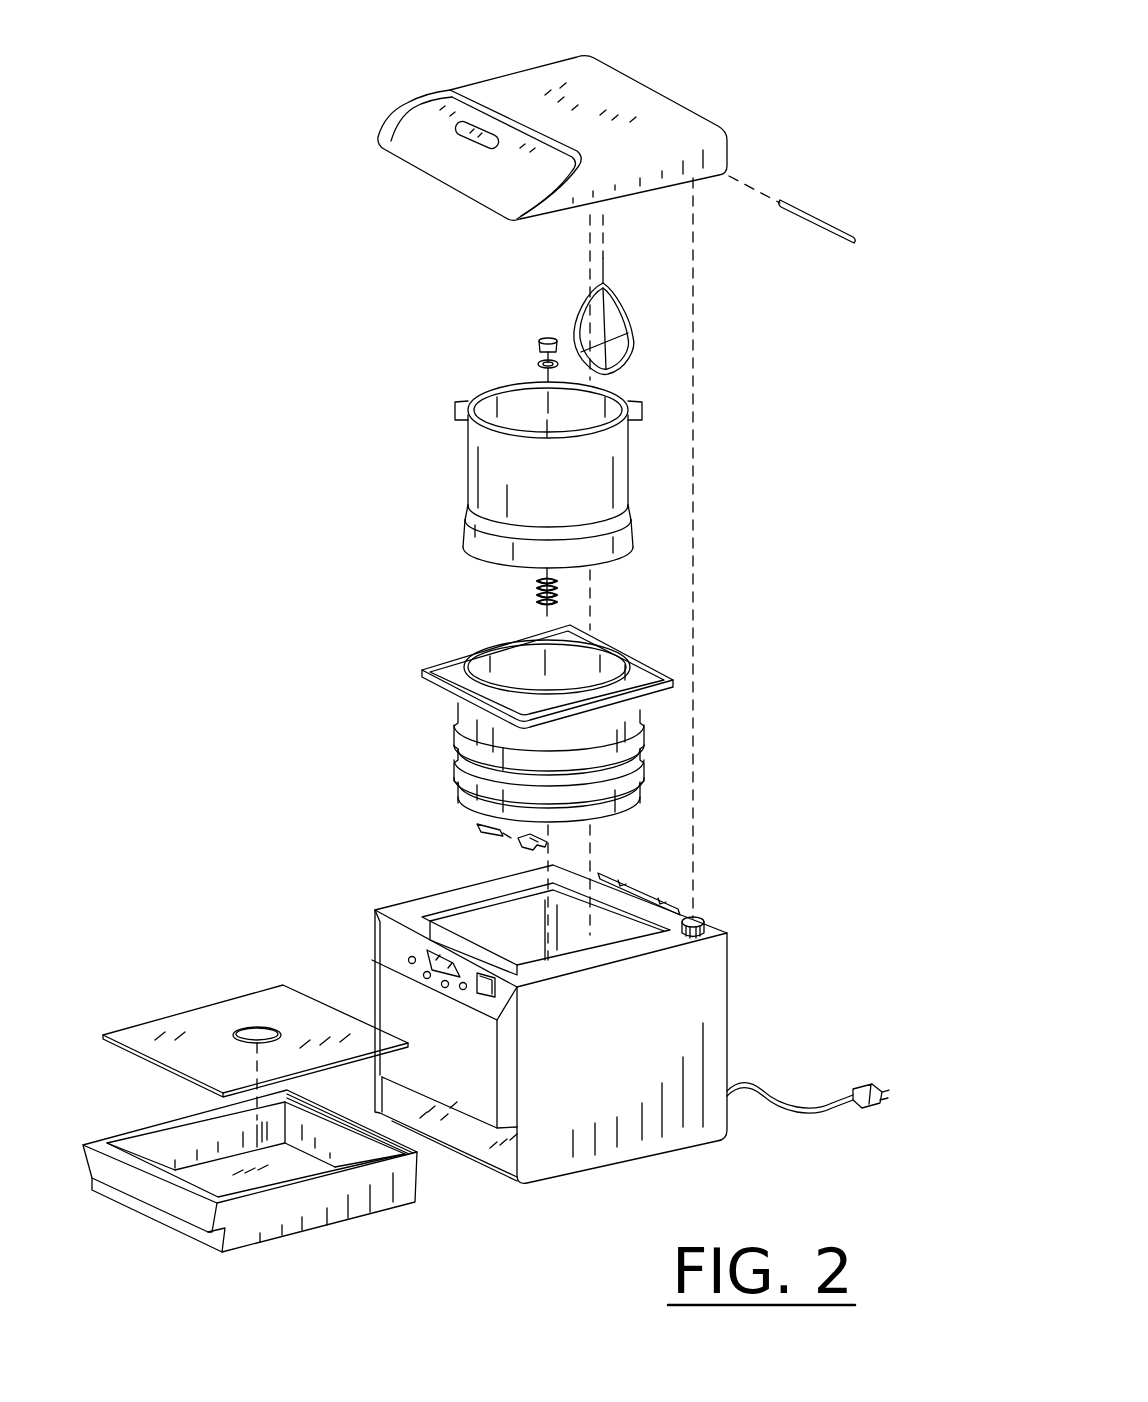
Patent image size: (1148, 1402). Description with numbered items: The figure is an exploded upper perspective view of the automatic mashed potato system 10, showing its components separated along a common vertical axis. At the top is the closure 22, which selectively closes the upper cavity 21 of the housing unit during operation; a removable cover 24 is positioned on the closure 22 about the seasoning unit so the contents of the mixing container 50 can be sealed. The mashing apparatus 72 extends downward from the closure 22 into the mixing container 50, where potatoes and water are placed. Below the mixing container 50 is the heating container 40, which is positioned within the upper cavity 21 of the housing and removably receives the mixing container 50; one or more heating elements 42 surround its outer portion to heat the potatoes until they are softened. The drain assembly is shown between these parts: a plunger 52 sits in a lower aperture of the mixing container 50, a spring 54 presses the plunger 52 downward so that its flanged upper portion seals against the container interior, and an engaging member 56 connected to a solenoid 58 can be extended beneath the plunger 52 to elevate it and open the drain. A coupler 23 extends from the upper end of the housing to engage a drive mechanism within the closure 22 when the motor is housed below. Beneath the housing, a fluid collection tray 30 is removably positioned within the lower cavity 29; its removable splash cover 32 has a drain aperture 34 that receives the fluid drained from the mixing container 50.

The automatic mashed potato system 10 is at (810, 80).
The closure 22 is at (603, 97).
The removable cover 24 is at (433, 155).
The mashing apparatus 72 is at (620, 303).
The plunger 52 is at (535, 343).
The mixing container 50 is at (633, 453).
The spring 54 is at (537, 587).
The heating container 40 is at (655, 658).
The heating elements 42 is at (640, 770).
The solenoid 58 is at (477, 827).
The engaging member 56 is at (523, 843).
The lower cavity 29 is at (476, 1138).
The upper cavity 21 is at (607, 913).
The coupler 23 is at (702, 919).
The removable splash cover 32 is at (193, 1017).
The drain aperture 34 is at (257, 1027).
The fluid collection tray 30 is at (352, 1233).